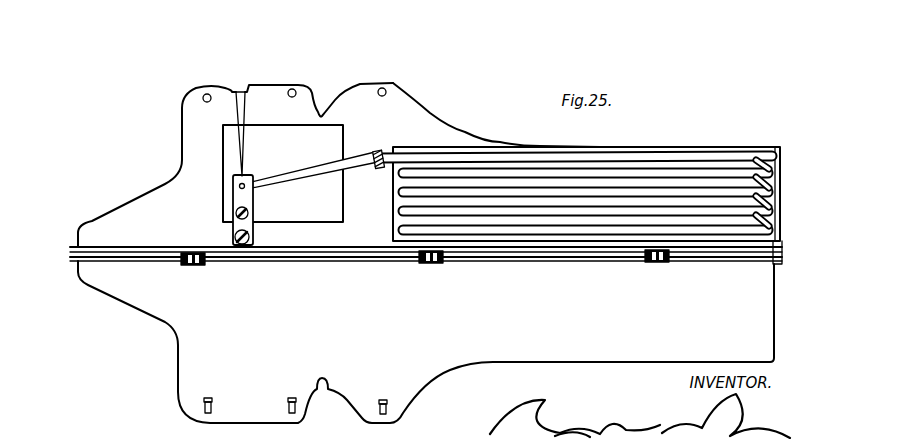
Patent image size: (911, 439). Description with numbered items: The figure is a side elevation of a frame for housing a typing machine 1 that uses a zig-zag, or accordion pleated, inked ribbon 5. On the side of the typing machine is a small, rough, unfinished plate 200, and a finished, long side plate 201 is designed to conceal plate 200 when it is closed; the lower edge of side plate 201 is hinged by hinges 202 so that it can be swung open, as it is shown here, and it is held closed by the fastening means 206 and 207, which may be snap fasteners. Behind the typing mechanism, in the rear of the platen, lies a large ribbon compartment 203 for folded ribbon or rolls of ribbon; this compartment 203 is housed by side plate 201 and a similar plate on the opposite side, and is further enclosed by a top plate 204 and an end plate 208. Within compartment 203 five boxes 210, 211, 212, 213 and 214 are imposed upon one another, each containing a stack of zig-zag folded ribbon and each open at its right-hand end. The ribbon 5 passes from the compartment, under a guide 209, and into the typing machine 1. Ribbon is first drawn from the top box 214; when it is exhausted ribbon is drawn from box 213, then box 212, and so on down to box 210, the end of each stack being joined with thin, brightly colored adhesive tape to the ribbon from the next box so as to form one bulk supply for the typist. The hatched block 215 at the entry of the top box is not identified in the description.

The typing machine 1 is at (185, 108).
The zig-zag folded ribbon 5 is at (640, 155).
The plate 200 is at (173, 193).
The side plate 201 is at (426, 342).
The hinges 202 is at (432, 263).
The ribbon compartment 203 is at (465, 137).
The top plate 204 is at (415, 98).
The fastening means 206 is at (290, 400).
The fastening means 207 is at (378, 89).
The end plate 208 is at (783, 153).
The guide 209 is at (247, 185).
The box 210 is at (395, 232).
The box 211 is at (395, 212).
The box 212 is at (395, 193).
The box 213 is at (395, 175).
The top box 214 is at (407, 147).
The coupling block 215 is at (378, 151).